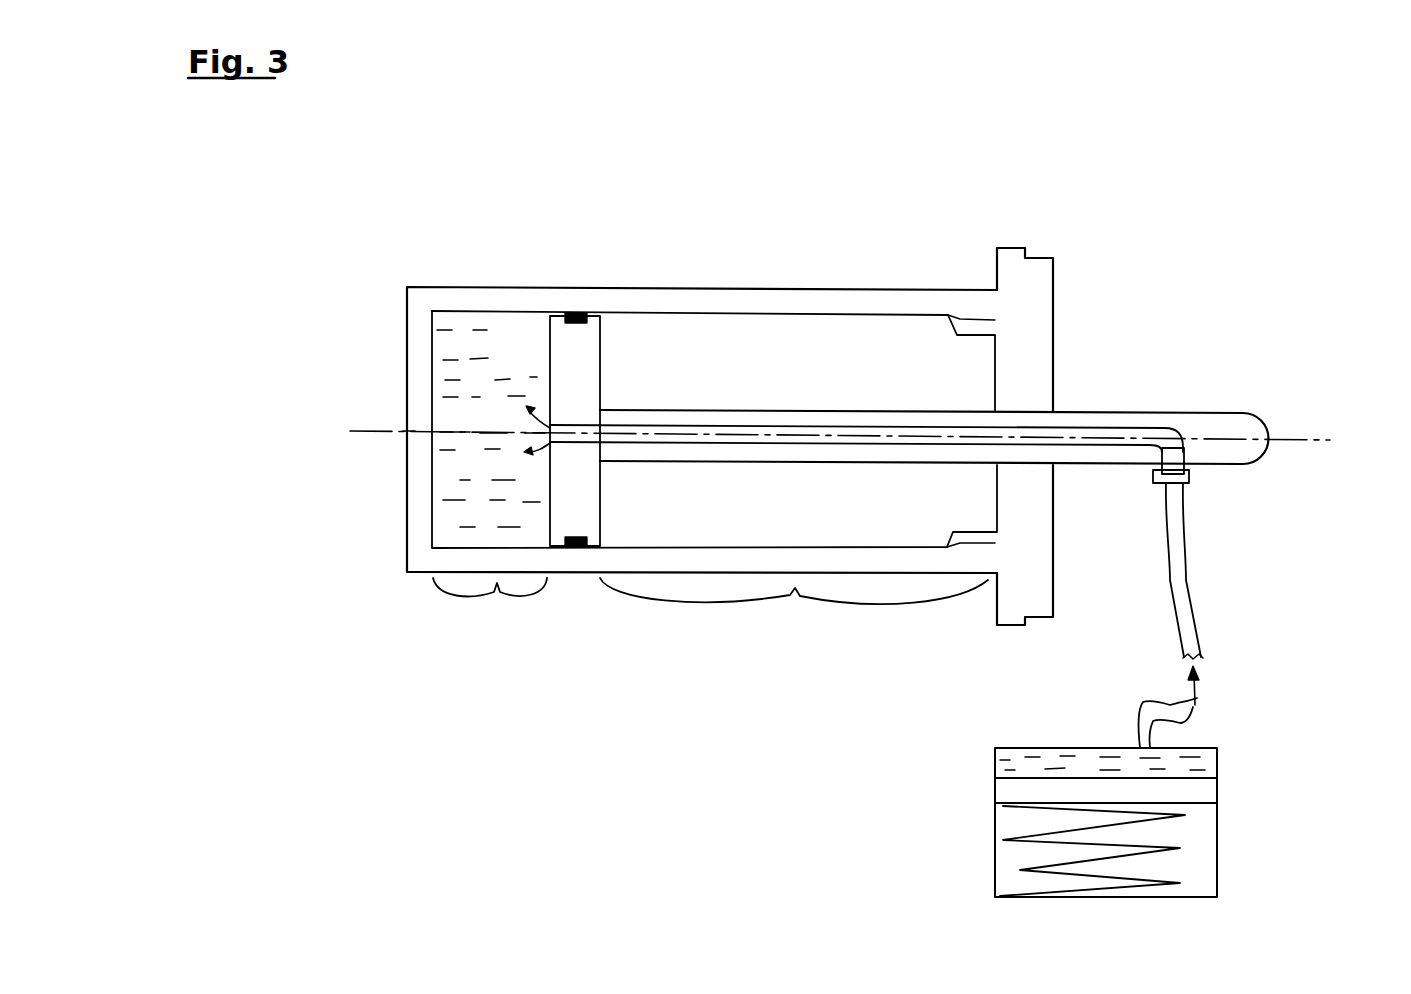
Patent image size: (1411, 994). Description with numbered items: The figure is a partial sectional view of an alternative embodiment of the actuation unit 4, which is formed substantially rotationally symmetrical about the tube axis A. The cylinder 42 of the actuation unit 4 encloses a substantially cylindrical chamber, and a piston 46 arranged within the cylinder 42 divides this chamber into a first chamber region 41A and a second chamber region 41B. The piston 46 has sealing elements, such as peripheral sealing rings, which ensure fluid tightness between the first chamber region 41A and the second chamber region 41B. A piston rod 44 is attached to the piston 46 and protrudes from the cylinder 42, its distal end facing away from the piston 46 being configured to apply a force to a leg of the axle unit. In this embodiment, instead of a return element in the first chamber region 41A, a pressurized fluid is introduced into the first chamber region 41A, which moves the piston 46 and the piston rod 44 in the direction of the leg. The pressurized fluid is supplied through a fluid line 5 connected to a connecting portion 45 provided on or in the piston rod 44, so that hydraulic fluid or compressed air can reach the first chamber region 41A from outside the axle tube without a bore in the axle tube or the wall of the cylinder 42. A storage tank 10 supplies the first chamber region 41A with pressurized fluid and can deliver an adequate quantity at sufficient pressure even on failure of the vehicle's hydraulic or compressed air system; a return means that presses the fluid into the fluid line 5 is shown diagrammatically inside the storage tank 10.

The actuation unit 4 is at (788, 267).
The cylinder 42 is at (877, 302).
The piston 46 is at (518, 337).
The piston rod 44 is at (1193, 423).
The connecting portion 45 is at (1187, 473).
The fluid line 5 is at (1185, 620).
The storage tank 10 is at (1207, 818).
The first chamber region 41A is at (495, 600).
The second chamber region 41B is at (787, 608).
The tube axis A is at (668, 440).